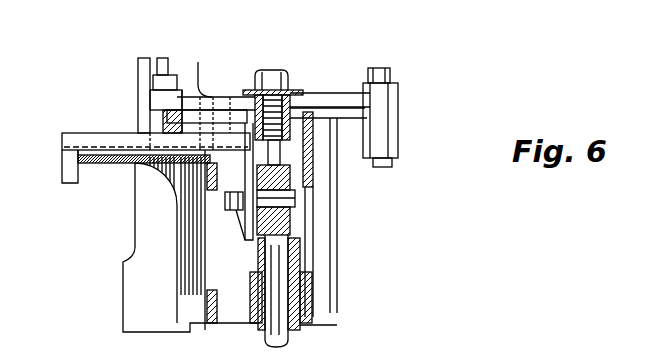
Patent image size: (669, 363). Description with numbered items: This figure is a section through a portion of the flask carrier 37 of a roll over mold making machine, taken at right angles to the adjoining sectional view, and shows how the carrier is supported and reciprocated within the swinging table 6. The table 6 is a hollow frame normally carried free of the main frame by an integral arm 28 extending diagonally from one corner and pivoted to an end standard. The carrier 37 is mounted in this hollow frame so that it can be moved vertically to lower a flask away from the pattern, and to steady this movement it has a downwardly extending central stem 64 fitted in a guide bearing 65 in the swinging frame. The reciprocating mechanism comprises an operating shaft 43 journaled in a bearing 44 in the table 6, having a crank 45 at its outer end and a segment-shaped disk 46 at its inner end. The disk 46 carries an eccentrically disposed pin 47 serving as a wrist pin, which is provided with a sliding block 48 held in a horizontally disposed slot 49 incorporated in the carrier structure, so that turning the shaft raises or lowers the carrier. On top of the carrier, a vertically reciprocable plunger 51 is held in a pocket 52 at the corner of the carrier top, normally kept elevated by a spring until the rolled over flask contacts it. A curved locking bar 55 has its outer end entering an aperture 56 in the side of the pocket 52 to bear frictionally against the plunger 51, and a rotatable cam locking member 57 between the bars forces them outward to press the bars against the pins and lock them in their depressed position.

The swinging table 6 is at (333, 203).
The arm 28 is at (148, 60).
The flask carrier 37 is at (340, 113).
The operating shaft 43 is at (102, 137).
The bearing 44 is at (110, 165).
The crank 45 is at (53, 182).
The disk 46 is at (250, 173).
The pin 47 is at (293, 193).
The sliding block 48 is at (295, 227).
The slot 49 is at (258, 240).
The plunger 51 is at (193, 65).
The pocket 52 is at (398, 137).
The locking bar 55 is at (223, 102).
The aperture 56 is at (167, 100).
The locking member 57 is at (290, 90).
The central stem 64 is at (278, 258).
The guide bearing 65 is at (303, 267).